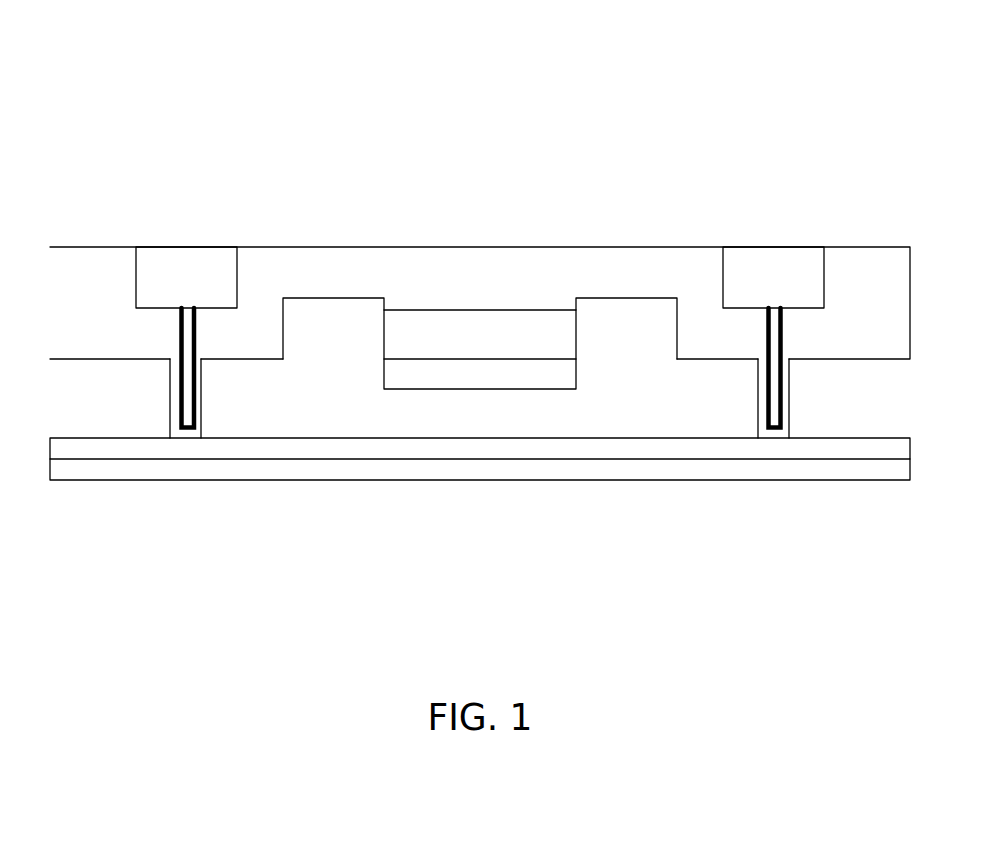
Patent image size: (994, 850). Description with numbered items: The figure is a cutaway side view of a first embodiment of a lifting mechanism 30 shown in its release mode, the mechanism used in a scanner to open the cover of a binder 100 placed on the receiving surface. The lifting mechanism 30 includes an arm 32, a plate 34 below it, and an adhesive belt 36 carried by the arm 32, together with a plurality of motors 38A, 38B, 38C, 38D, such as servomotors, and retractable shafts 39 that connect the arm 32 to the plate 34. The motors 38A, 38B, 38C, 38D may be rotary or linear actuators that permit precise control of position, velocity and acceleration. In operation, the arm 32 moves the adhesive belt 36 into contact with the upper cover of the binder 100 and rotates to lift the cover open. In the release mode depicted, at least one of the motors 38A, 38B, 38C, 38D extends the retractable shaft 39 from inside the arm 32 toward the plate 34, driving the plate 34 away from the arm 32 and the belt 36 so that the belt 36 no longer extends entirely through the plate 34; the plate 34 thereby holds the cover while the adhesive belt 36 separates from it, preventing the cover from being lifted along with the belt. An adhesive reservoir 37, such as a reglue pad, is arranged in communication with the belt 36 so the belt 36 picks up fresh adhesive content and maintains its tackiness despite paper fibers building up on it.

The lifting mechanism 30 is at (120, 60).
The arm 32 is at (873, 247).
The plate 34 is at (873, 438).
The adhesive belt 36 is at (479, 310).
The adhesive reservoir 37 is at (197, 397).
The motor 38A is at (186, 247).
The motor 38B is at (773, 247).
The motor 38C is at (333, 298).
The motor 38D is at (627, 298).
The retractable shaft 39 is at (170, 397).
The binder 100 is at (479, 480).